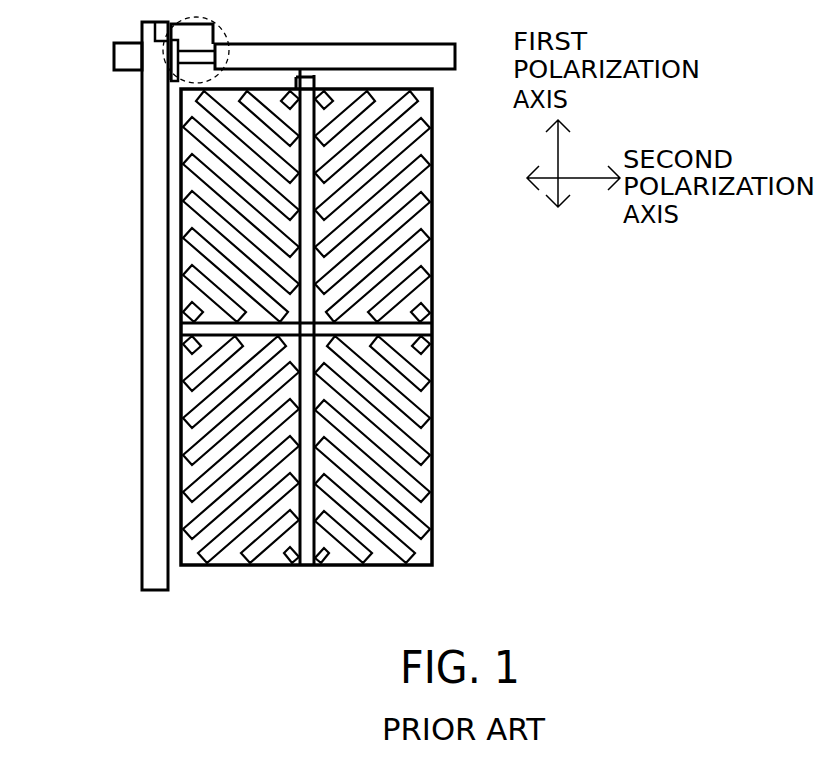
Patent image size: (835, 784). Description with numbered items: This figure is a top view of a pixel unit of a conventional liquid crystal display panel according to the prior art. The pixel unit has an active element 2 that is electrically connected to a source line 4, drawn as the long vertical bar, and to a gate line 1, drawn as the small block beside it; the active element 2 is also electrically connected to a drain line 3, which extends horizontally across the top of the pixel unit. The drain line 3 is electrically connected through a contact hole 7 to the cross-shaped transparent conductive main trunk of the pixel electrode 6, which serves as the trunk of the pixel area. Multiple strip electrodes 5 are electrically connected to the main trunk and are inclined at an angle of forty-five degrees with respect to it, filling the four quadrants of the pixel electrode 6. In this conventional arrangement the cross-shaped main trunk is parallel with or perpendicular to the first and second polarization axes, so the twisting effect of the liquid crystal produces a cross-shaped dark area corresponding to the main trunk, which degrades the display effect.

The gate line 1 is at (116, 53).
The active element 2 is at (230, 33).
The drain line 3 is at (320, 70).
The source line 4 is at (143, 225).
The strip electrodes 5 is at (395, 165).
The pixel electrode 6 is at (180, 313).
The contact hole 7 is at (320, 340).